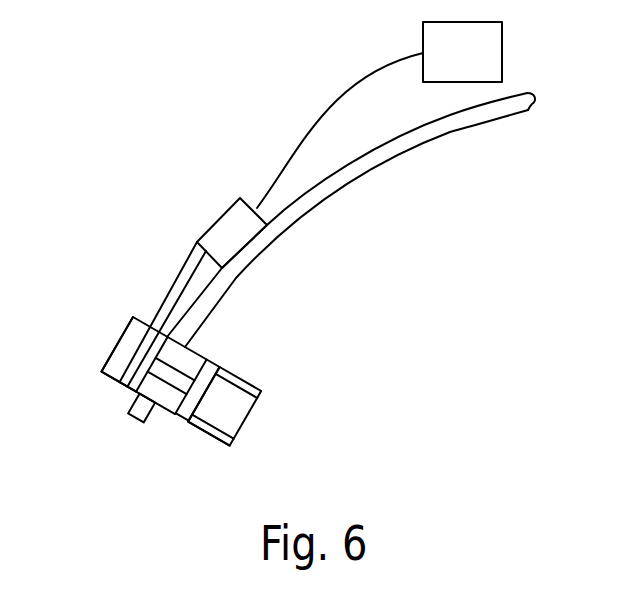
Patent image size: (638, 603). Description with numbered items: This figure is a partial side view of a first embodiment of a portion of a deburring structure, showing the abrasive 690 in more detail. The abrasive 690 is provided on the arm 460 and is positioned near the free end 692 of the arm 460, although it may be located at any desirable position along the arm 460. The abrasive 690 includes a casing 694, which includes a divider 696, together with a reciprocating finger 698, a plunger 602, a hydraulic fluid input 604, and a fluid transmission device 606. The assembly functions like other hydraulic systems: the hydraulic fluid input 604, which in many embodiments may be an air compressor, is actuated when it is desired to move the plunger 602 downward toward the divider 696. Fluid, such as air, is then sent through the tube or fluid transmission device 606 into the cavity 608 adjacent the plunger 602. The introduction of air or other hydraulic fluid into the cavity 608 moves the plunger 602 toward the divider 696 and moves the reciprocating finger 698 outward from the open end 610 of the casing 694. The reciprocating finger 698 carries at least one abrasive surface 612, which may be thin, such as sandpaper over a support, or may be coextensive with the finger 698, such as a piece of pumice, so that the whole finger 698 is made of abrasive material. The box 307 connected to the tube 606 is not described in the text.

The control unit 307 is at (502, 37).
The arm 460 is at (453, 131).
The hydraulic fluid input 604 is at (220, 218).
The fluid transmission device 606 is at (173, 287).
The cavity 608 is at (122, 357).
The plunger 602 is at (118, 378).
The casing 694 is at (127, 326).
The divider 696 is at (202, 354).
The reciprocating finger 698 is at (239, 379).
The abrasive surface 612 is at (252, 411).
The open end 610 is at (206, 434).
The free end 692 is at (133, 420).
The abrasive 690 is at (105, 414).